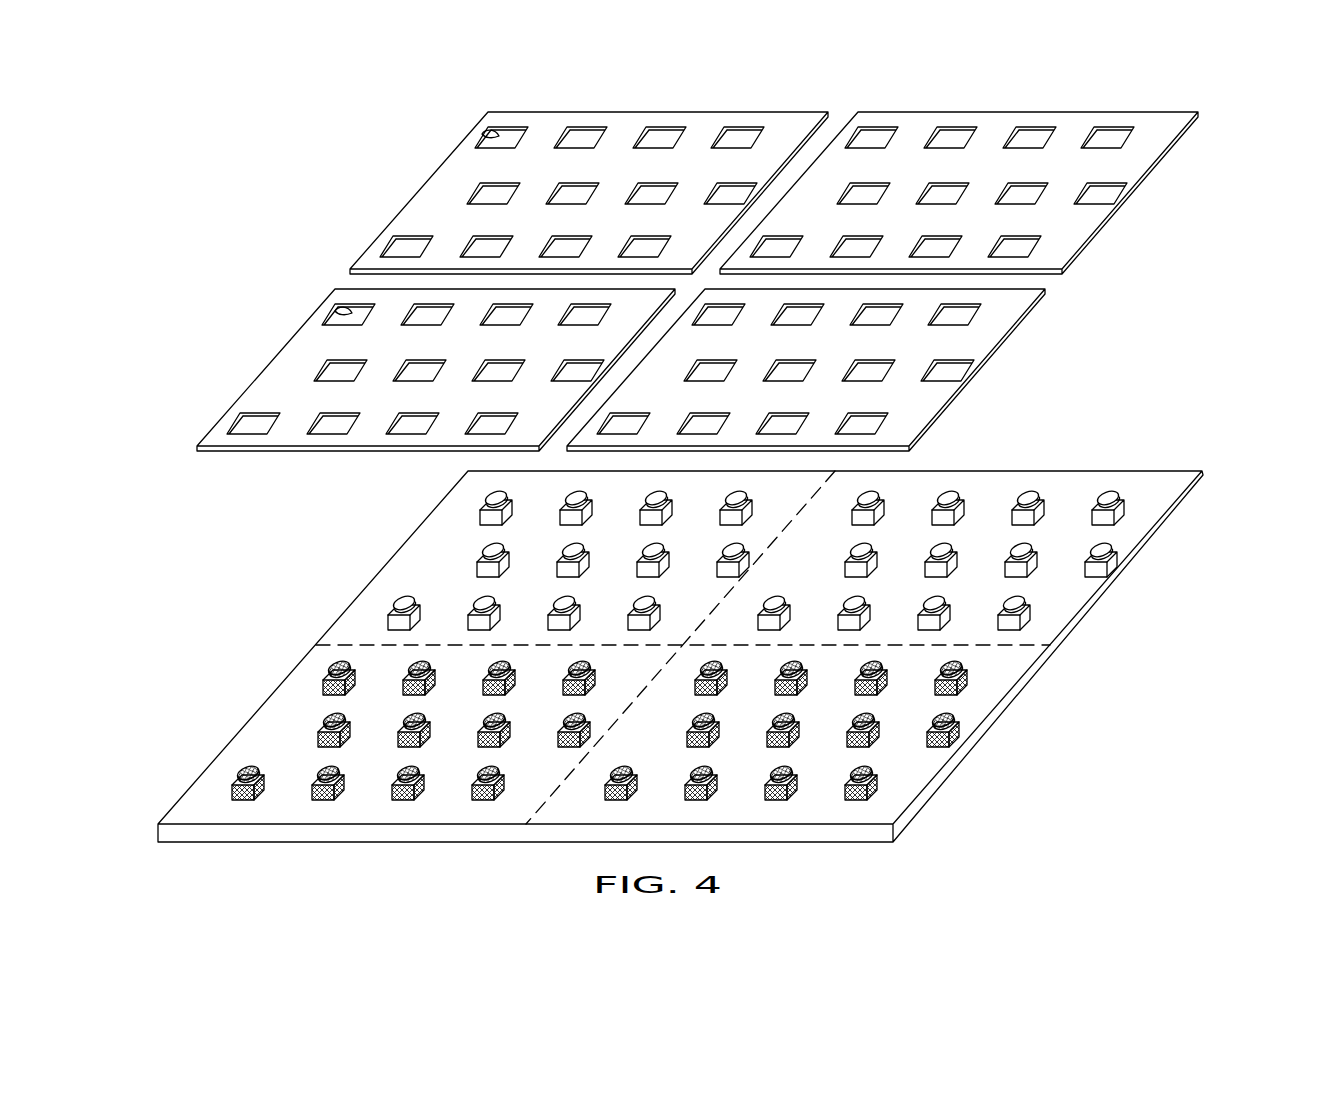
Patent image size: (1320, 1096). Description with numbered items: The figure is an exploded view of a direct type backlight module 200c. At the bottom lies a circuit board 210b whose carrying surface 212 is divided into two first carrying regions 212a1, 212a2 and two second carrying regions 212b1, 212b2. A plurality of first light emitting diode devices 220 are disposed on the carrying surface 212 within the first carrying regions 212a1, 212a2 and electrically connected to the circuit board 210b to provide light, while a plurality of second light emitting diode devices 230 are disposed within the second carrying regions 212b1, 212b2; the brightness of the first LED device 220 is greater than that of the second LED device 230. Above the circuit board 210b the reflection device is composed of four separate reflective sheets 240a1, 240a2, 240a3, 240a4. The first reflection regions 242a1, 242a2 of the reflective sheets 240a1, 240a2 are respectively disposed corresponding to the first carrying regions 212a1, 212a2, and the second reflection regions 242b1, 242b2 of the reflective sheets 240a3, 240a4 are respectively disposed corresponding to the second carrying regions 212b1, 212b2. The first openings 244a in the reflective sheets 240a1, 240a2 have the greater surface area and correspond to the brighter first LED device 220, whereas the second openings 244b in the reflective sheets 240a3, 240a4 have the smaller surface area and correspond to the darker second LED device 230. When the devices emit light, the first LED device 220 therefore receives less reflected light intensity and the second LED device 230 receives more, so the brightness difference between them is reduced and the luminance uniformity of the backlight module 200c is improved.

The backlight module 200c is at (713, 486).
The circuit board 210b is at (920, 776).
The carrying surface 212 is at (721, 690).
The first carrying region 212a1 is at (507, 559).
The first carrying region 212a2 is at (1137, 528).
The second carrying region 212b1 is at (397, 760).
The second carrying region 212b2 is at (876, 806).
The first light emitting diode device 220 is at (387, 621).
The second light emitting diode device 230 is at (318, 690).
The reflective sheet 240a1 is at (536, 178).
The reflective sheet 240a2 is at (1016, 193).
The reflective sheet 240a3 is at (395, 347).
The reflective sheet 240a4 is at (863, 370).
The first reflection region 242a1 is at (455, 175).
The first reflection region 242a2 is at (1160, 142).
The second reflection region 242b1 is at (298, 362).
The second reflection region 242b2 is at (927, 408).
The first opening 244a is at (459, 110).
The second opening 244b is at (352, 313).